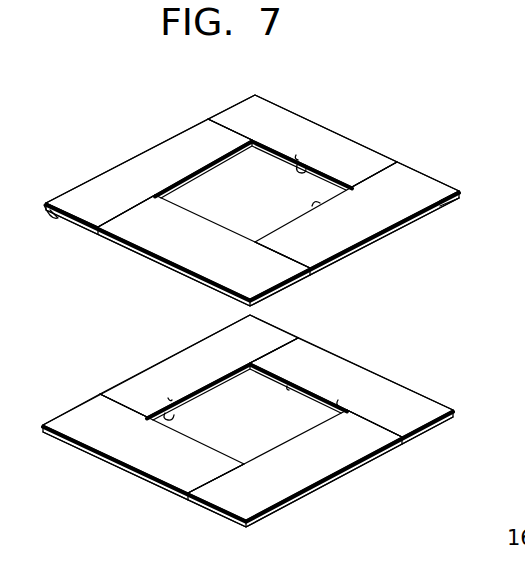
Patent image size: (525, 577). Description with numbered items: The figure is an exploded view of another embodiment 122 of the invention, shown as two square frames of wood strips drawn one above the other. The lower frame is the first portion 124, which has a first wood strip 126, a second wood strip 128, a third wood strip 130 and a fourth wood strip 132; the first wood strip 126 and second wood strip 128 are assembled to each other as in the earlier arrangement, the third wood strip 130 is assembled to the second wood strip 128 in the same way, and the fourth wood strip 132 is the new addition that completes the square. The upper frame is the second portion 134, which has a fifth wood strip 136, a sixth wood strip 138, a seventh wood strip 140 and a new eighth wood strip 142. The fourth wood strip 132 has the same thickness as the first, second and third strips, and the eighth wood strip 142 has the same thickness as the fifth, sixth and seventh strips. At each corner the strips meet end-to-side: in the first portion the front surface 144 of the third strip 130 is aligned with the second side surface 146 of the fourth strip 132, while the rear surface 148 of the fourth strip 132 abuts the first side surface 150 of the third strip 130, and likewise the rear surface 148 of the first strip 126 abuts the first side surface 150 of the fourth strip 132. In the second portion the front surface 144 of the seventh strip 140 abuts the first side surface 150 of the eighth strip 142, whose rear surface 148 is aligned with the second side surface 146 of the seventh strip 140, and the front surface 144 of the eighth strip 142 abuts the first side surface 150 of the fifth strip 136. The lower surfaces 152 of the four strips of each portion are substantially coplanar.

The embodiment 122 is at (418, 108).
The first portion 124 is at (458, 415).
The first wood strip 126 is at (353, 473).
The second wood strip 128 is at (153, 485).
The third wood strip 130 is at (164, 361).
The fourth wood strip 132 is at (363, 365).
The second portion 134 is at (463, 196).
The fifth wood strip 136 is at (410, 225).
The sixth wood strip 138 is at (164, 265).
The seventh wood strip 140 is at (143, 150).
The eighth wood strip 142 is at (339, 133).
The front surface 144 is at (213, 117).
The second side surface 146 is at (188, 128).
The rear surface 148 is at (238, 97).
The first side surface 150 is at (300, 168).
The lower surfaces 152 is at (298, 157).